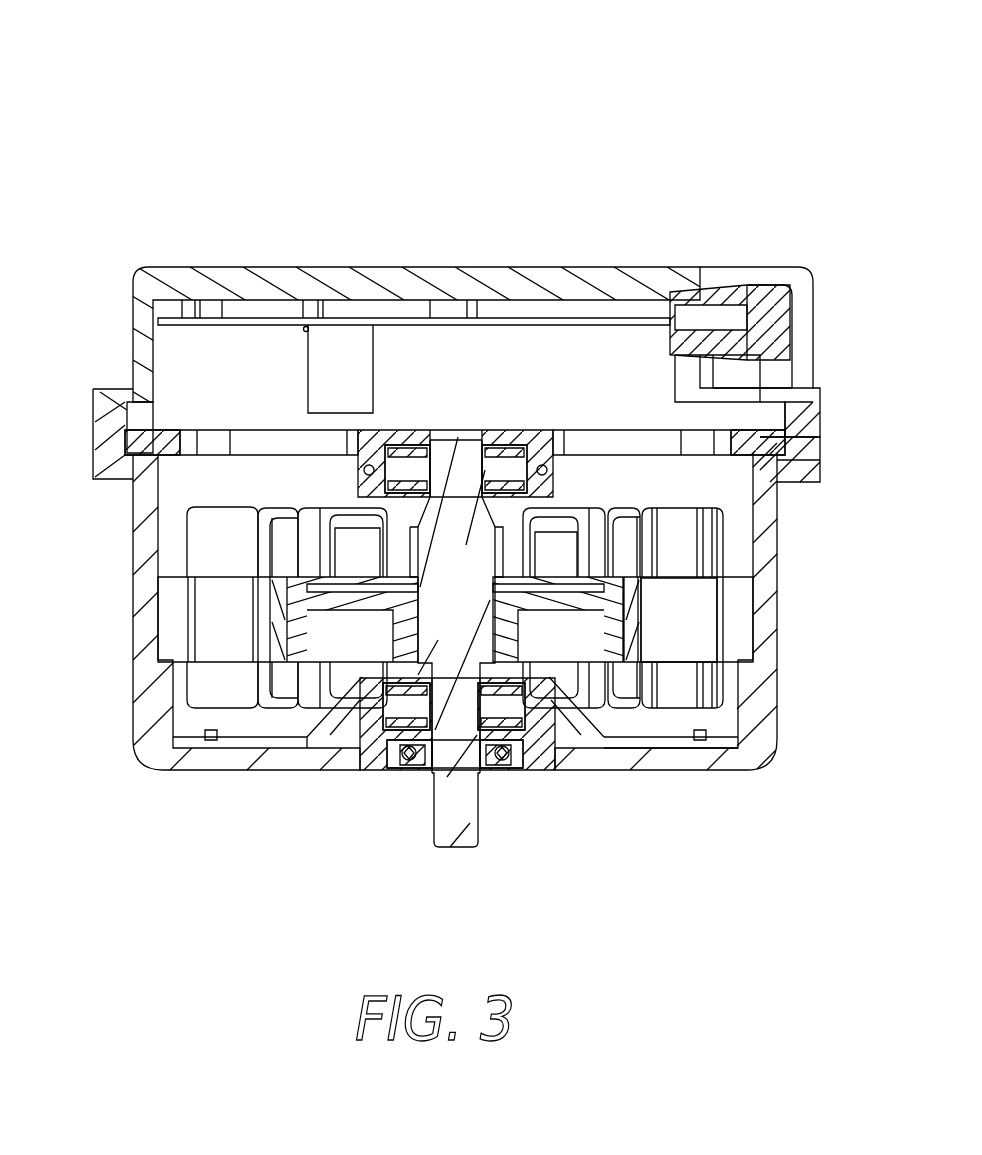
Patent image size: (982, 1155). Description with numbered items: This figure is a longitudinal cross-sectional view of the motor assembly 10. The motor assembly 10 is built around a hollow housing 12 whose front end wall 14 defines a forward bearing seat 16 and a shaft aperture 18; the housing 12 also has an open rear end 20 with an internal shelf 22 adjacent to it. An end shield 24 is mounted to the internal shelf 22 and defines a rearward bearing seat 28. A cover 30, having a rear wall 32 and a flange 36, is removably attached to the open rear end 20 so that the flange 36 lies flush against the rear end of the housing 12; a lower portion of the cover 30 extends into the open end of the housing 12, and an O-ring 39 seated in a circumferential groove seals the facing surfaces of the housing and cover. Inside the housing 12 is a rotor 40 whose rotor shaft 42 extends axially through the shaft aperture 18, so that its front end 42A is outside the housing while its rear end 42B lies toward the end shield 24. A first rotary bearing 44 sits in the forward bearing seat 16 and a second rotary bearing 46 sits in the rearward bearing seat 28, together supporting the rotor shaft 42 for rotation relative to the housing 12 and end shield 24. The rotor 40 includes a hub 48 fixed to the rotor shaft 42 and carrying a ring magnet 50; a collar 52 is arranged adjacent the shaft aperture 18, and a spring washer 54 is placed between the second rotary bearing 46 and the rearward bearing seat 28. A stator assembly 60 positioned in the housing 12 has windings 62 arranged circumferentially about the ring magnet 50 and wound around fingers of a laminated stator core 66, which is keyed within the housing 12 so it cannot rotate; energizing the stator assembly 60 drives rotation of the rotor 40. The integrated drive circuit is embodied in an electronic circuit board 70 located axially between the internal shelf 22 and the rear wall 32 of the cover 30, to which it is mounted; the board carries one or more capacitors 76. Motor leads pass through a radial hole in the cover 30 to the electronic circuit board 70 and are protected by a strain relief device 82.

The motor assembly 10 is at (521, 140).
The housing 12 is at (779, 655).
The front end wall 14 is at (607, 755).
The forward bearing seat 16 is at (387, 713).
The shaft aperture 18 is at (417, 770).
The open rear end 20 is at (800, 390).
The internal shelf 22 is at (165, 437).
The end shield 24 is at (583, 432).
The rearward bearing seat 28 is at (472, 442).
The cover 30 is at (218, 264).
The rear wall 32 is at (390, 268).
The flange 36 is at (112, 386).
The O-ring 39 is at (787, 417).
The rotor 40 is at (295, 567).
The rotor shaft 42 is at (473, 624).
The front end 42A is at (447, 850).
The rear end 42B is at (440, 437).
The first rotary bearing 44 is at (497, 707).
The second rotary bearing 46 is at (508, 435).
The hub 48 is at (302, 628).
The ring magnet 50 is at (283, 628).
The collar 52 is at (487, 765).
The spring washer 54 is at (400, 432).
The stator assembly 60 is at (738, 548).
The windings 62 is at (585, 515).
The laminated stator core 66 is at (737, 603).
The electronic circuit board 70 is at (562, 335).
The capacitors 76 is at (358, 377).
The strain relief device 82 is at (762, 291).